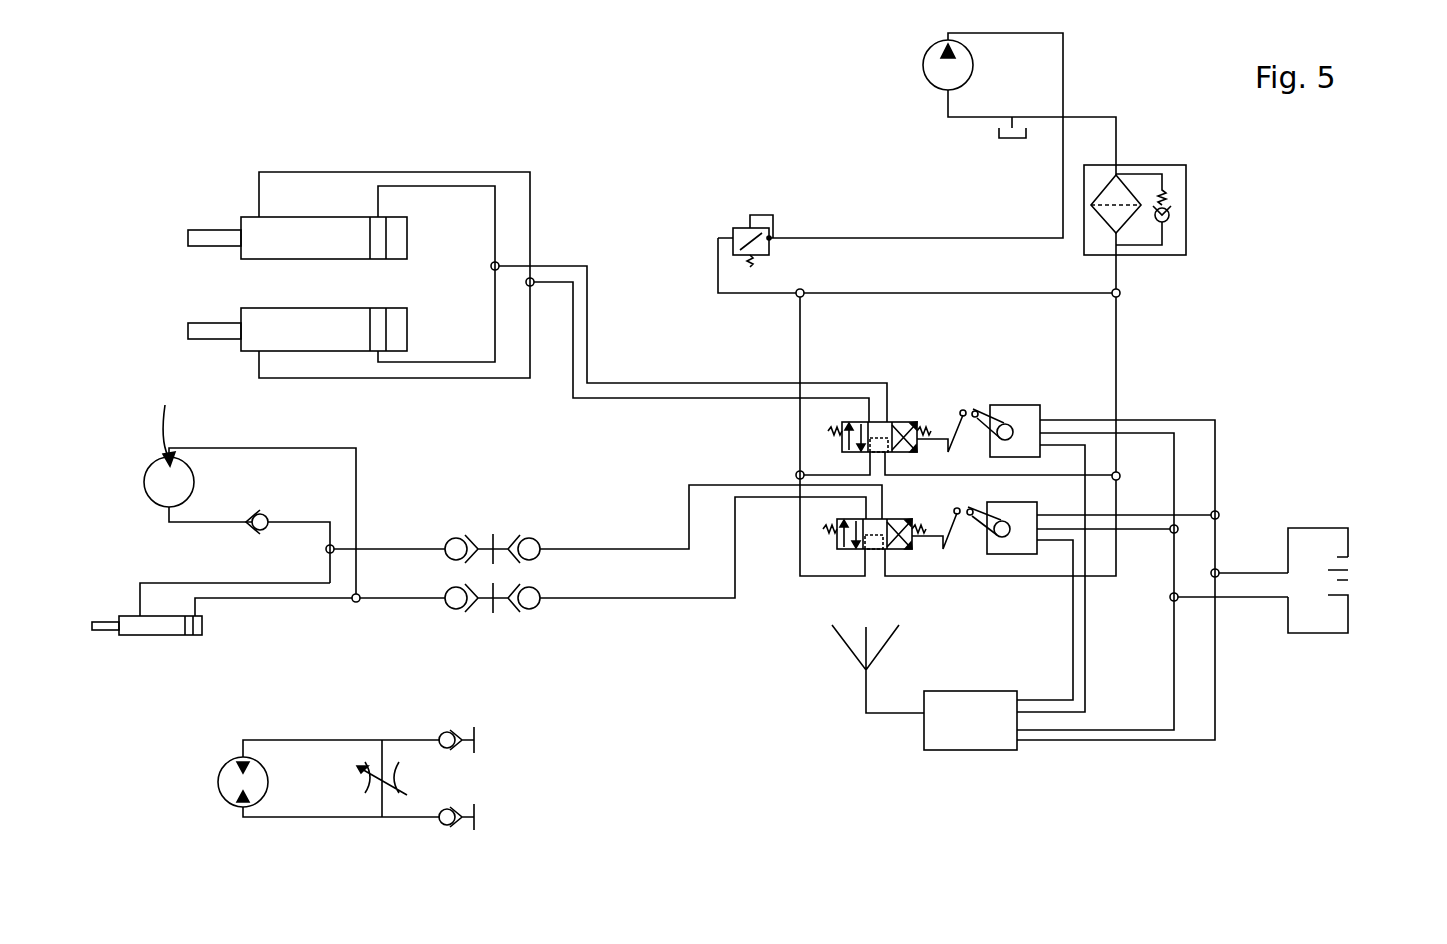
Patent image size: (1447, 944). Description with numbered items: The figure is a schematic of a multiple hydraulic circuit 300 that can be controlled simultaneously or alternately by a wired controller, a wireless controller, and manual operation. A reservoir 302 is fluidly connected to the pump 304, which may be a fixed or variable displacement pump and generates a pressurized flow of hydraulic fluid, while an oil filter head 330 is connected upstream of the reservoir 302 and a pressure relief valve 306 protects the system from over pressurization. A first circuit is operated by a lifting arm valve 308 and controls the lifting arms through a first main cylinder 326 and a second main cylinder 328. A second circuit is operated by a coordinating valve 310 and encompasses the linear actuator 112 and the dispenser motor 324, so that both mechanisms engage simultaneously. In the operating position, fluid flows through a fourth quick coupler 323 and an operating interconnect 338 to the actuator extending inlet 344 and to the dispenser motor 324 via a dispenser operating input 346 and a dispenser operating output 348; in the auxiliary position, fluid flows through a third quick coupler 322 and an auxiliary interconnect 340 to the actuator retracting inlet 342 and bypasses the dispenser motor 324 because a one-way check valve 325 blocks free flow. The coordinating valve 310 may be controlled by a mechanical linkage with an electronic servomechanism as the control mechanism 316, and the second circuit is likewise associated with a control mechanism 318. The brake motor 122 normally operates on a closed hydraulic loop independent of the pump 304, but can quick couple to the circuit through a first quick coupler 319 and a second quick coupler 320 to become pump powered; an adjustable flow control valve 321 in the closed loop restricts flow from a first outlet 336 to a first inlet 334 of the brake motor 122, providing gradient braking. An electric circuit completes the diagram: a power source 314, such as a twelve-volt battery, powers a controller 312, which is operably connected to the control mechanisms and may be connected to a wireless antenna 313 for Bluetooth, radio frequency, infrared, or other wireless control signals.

The multiple hydraulic circuit 300 is at (172, 100).
The reservoir 302 is at (993, 133).
The pump 304 is at (975, 62).
The pressure relief valve 306 is at (736, 229).
The lifting arm valve 308 is at (892, 420).
The coordinating valve 310 is at (872, 550).
The controller 312 is at (982, 690).
The wireless antenna 313 is at (892, 641).
The power source 314 is at (1337, 652).
The control mechanism 316 is at (1038, 403).
The control mechanism 318 is at (1027, 502).
The first quick coupler 319 is at (452, 828).
The second quick coupler 320 is at (450, 750).
The flow control valve 321 is at (367, 808).
The third quick coupler 322 is at (503, 565).
The fourth quick coupler 323 is at (505, 624).
The dispenser motor 324 is at (150, 465).
The one-way check valve 325 is at (270, 518).
The first main cylinder 326 is at (195, 330).
The second main cylinder 328 is at (193, 242).
The oil filter head 330 is at (1187, 175).
The first inlet 334 is at (242, 814).
The first outlet 336 is at (245, 752).
The operating interconnect 338 is at (355, 600).
The auxiliary interconnect 340 is at (333, 547).
The actuator retracting inlet 342 is at (140, 596).
The actuator extending inlet 344 is at (198, 608).
The dispenser operating input 346 is at (165, 423).
The dispenser operating output 348 is at (170, 514).
The linear actuator 112 is at (150, 632).
The brake motor 122 is at (242, 760).